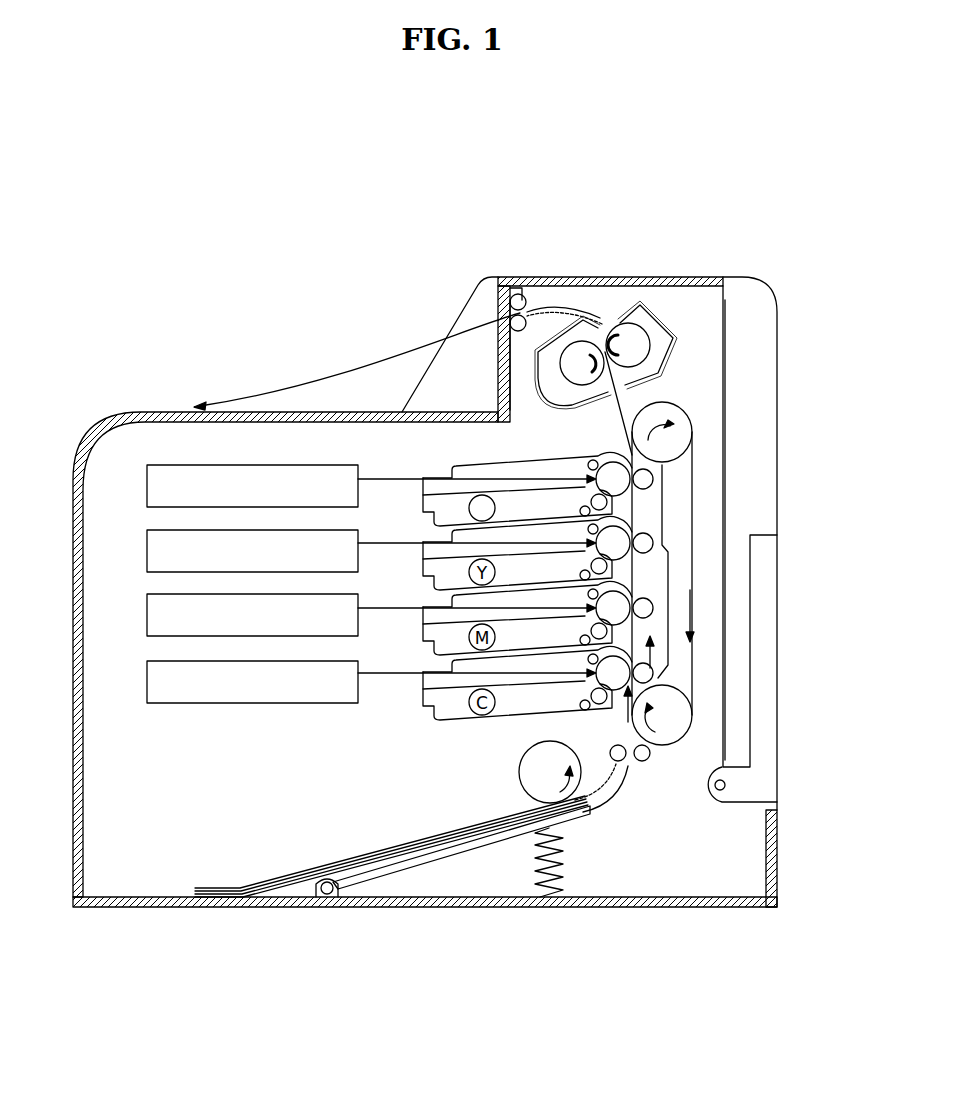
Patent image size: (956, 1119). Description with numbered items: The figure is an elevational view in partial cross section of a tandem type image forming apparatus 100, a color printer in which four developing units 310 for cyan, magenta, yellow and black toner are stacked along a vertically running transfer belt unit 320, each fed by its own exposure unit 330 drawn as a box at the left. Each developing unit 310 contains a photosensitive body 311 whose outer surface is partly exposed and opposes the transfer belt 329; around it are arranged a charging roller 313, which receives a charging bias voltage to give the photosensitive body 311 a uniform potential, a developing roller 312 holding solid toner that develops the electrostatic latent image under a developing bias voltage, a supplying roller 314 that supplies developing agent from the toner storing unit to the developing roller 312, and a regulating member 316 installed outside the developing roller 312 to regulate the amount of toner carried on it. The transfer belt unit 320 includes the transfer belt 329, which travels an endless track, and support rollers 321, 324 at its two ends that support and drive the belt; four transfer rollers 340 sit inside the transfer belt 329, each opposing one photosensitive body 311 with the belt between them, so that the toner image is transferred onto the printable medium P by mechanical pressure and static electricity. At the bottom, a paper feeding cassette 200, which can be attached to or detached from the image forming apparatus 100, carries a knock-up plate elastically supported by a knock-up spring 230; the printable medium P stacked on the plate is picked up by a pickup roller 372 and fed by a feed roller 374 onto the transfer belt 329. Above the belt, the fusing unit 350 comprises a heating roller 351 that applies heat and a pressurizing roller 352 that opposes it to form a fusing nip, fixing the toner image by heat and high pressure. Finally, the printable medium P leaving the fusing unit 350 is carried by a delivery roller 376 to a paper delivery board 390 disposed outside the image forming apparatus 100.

The tandem type image forming apparatus 100 is at (96, 416).
The paper feeding cassette 200 is at (392, 880).
The knock-up spring 230 is at (567, 892).
The developing unit 310 is at (497, 412).
The photosensitive body 311 is at (612, 474).
The developing roller 312 is at (505, 467).
The charging roller 313 is at (591, 461).
The supplying roller 314 is at (582, 511).
The regulating member 316 is at (596, 490).
The transfer belt unit 320 is at (704, 495).
The support roller 321 is at (662, 718).
The support roller 324 is at (662, 436).
The transfer belt 329 is at (700, 580).
The exposure unit 330 is at (202, 455).
The transfer roller 340 is at (723, 548).
The fusing unit 350 is at (630, 319).
The heating roller 351 is at (634, 345).
The pressurizing roller 352 is at (578, 358).
The pickup roller 372 is at (547, 772).
The feed roller 374 is at (641, 762).
The delivery roller 376 is at (517, 293).
The paper delivery board 390 is at (295, 402).
The printable medium P is at (266, 864).